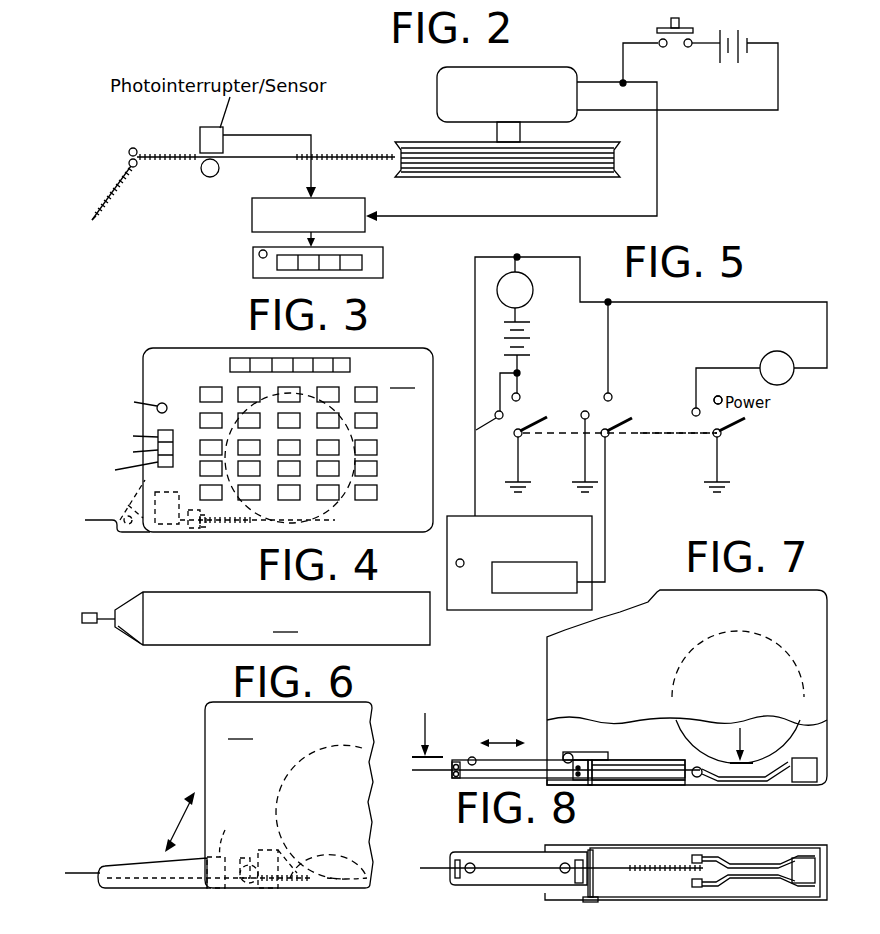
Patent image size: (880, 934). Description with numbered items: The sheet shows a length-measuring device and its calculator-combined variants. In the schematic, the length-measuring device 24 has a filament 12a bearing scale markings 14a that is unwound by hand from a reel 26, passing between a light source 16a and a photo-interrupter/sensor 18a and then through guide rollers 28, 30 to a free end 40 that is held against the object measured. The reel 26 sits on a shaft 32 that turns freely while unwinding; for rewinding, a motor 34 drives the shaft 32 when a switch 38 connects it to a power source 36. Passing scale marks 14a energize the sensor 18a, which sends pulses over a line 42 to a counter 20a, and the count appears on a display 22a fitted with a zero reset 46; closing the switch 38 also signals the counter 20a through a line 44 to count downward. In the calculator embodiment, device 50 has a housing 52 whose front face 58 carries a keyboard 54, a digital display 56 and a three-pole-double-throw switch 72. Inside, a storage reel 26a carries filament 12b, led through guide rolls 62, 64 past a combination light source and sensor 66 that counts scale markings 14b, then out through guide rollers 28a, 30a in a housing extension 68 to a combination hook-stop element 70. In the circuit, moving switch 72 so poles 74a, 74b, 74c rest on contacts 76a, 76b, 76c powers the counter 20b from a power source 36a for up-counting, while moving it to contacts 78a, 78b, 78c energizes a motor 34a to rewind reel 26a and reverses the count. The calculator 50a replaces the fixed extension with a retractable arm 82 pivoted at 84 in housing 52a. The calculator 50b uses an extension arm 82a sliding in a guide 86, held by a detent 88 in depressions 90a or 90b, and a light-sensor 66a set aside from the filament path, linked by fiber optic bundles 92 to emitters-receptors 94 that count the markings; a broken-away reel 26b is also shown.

In FIG. 2, the filament 12a is at (101, 190).
In FIG. 3, the filament 12b is at (242, 525).
In FIG. 4, the filament 12b is at (108, 623).
In FIG. 6, the filament 12b is at (85, 873).
In FIG. 7, the filament 12b is at (648, 780).
In FIG. 8, the filament 12b is at (495, 870).
In FIG. 2, the scale markings 14a is at (342, 157).
In FIG. 3, the scale markings 14b is at (255, 515).
In FIG. 6, the scale markings 14b is at (305, 852).
In FIG. 8, the scale markings 14b is at (642, 862).
In FIG. 2, the light source 16a is at (204, 177).
In FIG. 2, the photo-interrupter/sensor 18a is at (200, 133).
In FIG. 2, the counter 20a is at (337, 200).
In FIG. 5, the counter 20b is at (535, 595).
In FIG. 2, the display 22a is at (383, 263).
In FIG. 2, the length-measuring device 24 is at (388, 80).
In FIG. 2, the reel 26 is at (520, 178).
In FIG. 3, the storage reel 26a is at (333, 512).
In FIG. 6, the storage reel 26a is at (352, 745).
In FIG. 7, the spool 26b is at (700, 660).
In FIG. 2, the guide roller 28 is at (131, 148).
In FIG. 3, the guide roller 28a is at (128, 490).
In FIG. 7, the guide roller 28a is at (456, 762).
In FIG. 8, the guide roller 28a is at (427, 884).
In FIG. 2, the guide roller 30 is at (136, 167).
In FIG. 3, the guide roller 30a is at (135, 532).
In FIG. 7, the guide roller 30a is at (454, 779).
In FIG. 8, the guide roller 30a is at (455, 872).
In FIG. 2, the shaft 32 is at (518, 135).
In FIG. 2, the motor 34 is at (547, 70).
In FIG. 5, the motor 34a is at (783, 346).
In FIG. 2, the power source 36 is at (740, 29).
In FIG. 5, the power source 36a is at (530, 331).
In FIG. 2, the switch 38 is at (648, 28).
In FIG. 2, the free end 40 is at (95, 222).
In FIG. 2, the line 42 is at (311, 135).
In FIG. 2, the line 44 is at (658, 172).
In FIG. 2, the zero reset 46 is at (258, 255).
In FIG. 5, the device 50 is at (519, 590).
In FIG. 3, the device 50 is at (160, 333).
In FIG. 6, the length-measuring calculator 50a is at (198, 757).
In FIG. 7, the length-measuring calculator 50b is at (658, 587).
In FIG. 8, the length-measuring calculator 50b is at (418, 864).
In FIG. 3, the housing 52 is at (395, 349).
In FIG. 4, the housing 52 is at (272, 618).
In FIG. 6, the housing 52a is at (372, 705).
In FIG. 3, the keyboard 54 is at (385, 422).
In FIG. 3, the digital display 56 is at (237, 358).
In FIG. 3, the front face 58 is at (404, 375).
In FIG. 6, the front face 58 is at (242, 727).
In FIG. 3, the guide roll 62 is at (192, 532).
In FIG. 6, the guide roll 62 is at (278, 803).
In FIG. 7, the guide roll 62 is at (592, 760).
In FIG. 8, the guide roll 62 is at (636, 854).
In FIG. 3, the guide roll 64 is at (205, 530).
In FIG. 6, the guide roll 64 is at (262, 858).
In FIG. 7, the guide roll 64 is at (581, 780).
In FIG. 8, the guide roll 64 is at (583, 865).
In FIG. 5, the combination light source and sensor 66 is at (533, 290).
In FIG. 3, the combination light source and sensor 66 is at (167, 530).
In FIG. 6, the combination light source and sensor 66 is at (288, 823).
In FIG. 7, the light-sensor 66a is at (804, 782).
In FIG. 8, the light-sensor 66a is at (805, 858).
In FIG. 3, the housing extension 68 is at (128, 518).
In FIG. 4, the housing extension 68 is at (138, 646).
In FIG. 3, the combination hook-stop element 70 is at (86, 523).
In FIG. 4, the combination hook-stop element 70 is at (90, 625).
In FIG. 5, the three-pole-double-throw switch 72 is at (678, 442).
In FIG. 3, the three-pole-double-throw switch 72 is at (170, 424).
In FIG. 5, the pole 74a is at (720, 440).
In FIG. 5, the pole 74b is at (608, 440).
In FIG. 5, the pole 74c is at (516, 440).
In FIG. 5, the contact 76a is at (723, 404).
In FIG. 5, the contact 76b is at (610, 392).
In FIG. 5, the contact 76c is at (518, 392).
In FIG. 5, the contact 78a is at (694, 410).
In FIG. 5, the contact 78b is at (583, 440).
In FIG. 5, the contact 78c is at (475, 431).
In FIG. 6, the retractable arm 82 is at (145, 866).
In FIG. 7, the extension arm 82a is at (532, 760).
In FIG. 6, the pivot 84 is at (203, 840).
In FIG. 7, the guide 86 is at (668, 760).
In FIG. 7, the detent 88 is at (567, 752).
In FIG. 7, the detent-holding depression 90a is at (568, 765).
In FIG. 8, the detent-holding depression 90a is at (560, 865).
In FIG. 7, the detent-holding depression 90b is at (472, 757).
In FIG. 8, the detent-holding depression 90b is at (470, 863).
In FIG. 7, the fiber optic bundles 92 is at (745, 783).
In FIG. 8, the fiber optic bundles 92 is at (760, 862).
In FIG. 7, the emitters-receptors 94 is at (700, 778).
In FIG. 8, the emitters-receptors 94 is at (700, 856).